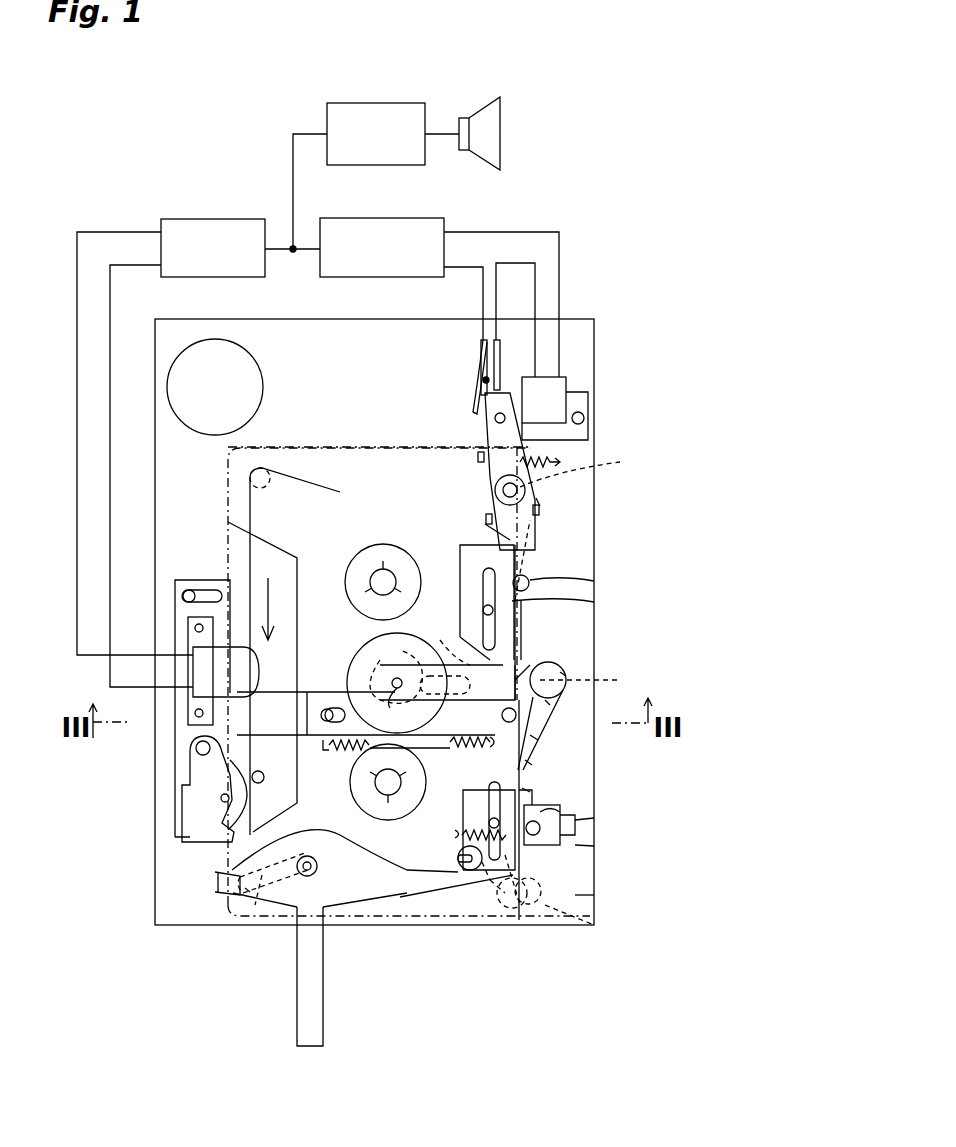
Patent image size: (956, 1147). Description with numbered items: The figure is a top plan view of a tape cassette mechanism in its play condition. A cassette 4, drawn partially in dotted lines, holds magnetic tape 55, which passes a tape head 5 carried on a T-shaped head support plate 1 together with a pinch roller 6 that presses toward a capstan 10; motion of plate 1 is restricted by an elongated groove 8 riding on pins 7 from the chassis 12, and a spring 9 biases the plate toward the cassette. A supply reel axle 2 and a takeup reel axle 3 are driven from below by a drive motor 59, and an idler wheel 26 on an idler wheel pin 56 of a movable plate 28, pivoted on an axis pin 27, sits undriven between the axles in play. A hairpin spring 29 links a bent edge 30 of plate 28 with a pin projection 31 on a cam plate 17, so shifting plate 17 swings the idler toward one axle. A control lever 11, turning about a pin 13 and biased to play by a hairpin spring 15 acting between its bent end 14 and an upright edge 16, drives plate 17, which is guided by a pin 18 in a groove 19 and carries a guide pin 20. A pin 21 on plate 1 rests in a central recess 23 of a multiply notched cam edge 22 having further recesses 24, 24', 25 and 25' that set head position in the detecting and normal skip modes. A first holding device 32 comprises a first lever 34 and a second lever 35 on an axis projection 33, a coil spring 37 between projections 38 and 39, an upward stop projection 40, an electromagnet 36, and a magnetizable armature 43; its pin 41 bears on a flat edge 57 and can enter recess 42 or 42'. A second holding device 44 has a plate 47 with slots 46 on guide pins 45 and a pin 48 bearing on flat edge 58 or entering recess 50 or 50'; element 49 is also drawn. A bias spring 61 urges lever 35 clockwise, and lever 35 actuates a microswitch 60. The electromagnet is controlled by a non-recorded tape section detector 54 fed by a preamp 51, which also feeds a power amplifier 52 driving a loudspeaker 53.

The T-shaped head support plate 1 is at (178, 745).
The supply reel axle 2 is at (372, 568).
The takeup reel axle 3 is at (362, 798).
The cassette 4 is at (335, 448).
The tape head 5 is at (205, 672).
The pinch roller 6 is at (182, 818).
The pins 7 is at (190, 588).
The elongated groove 8 is at (200, 588).
The spring 9 is at (348, 750).
The capstan 10 is at (264, 775).
The control lever 11 is at (297, 1025).
The chassis 12 is at (155, 915).
The pin 13 is at (312, 872).
The bent end 14 is at (216, 884).
The hairpin spring 15 is at (245, 890).
The upright edge 16 is at (256, 905).
The cam plate 17 is at (560, 775).
The pin 18 is at (483, 610).
The groove 19 is at (480, 570).
The guide pin 20 is at (480, 865).
The pin 21 is at (502, 715).
The multiply notched cam edge 22 is at (480, 750).
The central recess 23 is at (538, 736).
The first recess 24 is at (561, 763).
The recess 24' is at (556, 700).
The recess 25 is at (559, 793).
The recess 25' is at (533, 622).
The idler wheel 26 is at (352, 652).
The axis pin 27 is at (442, 634).
The movable plate 28 is at (394, 668).
The hairpin spring 29 is at (566, 676).
The bent edge 30 is at (548, 702).
The pin projection 31 is at (596, 673).
The first holding device 32 is at (488, 482).
The projection 33 is at (586, 471).
The first lever 34 is at (527, 542).
The second lever 35 is at (478, 408).
The electromagnet 36 is at (575, 400).
The coil spring 37 is at (540, 502).
The projection 38 is at (540, 510).
The upward projection 39 is at (476, 455).
The upward projection 40 is at (485, 518).
The pin 41 is at (594, 580).
The recess 42 is at (582, 607).
The recess 42' is at (463, 531).
The magnetizable armature 43 is at (505, 378).
The second holding device 44 is at (618, 893).
The guide pins 45 is at (450, 872).
The slots 46 is at (455, 835).
The plate 47 is at (594, 925).
The pin 48 is at (594, 847).
The pin 49 is at (490, 880).
The recess 50 is at (560, 843).
The recess 50' is at (570, 823).
The preamp 51 is at (212, 230).
The power amplifier 52 is at (370, 105).
The loudspeaker 53 is at (492, 113).
The non-recorded tape section detector 54 is at (380, 220).
The magnetic tape 55 is at (255, 512).
The idler wheel pin 56 is at (392, 707).
The flat edge 57 is at (530, 578).
The flat edge 58 is at (594, 822).
The drive motor 59 is at (263, 358).
The microswitch 60 is at (478, 355).
The bias spring 61 is at (548, 462).